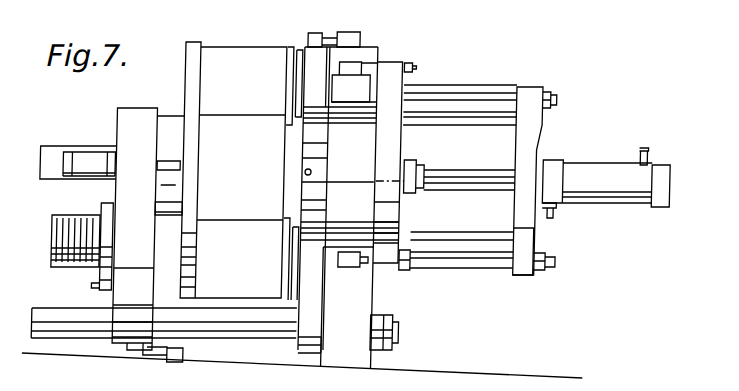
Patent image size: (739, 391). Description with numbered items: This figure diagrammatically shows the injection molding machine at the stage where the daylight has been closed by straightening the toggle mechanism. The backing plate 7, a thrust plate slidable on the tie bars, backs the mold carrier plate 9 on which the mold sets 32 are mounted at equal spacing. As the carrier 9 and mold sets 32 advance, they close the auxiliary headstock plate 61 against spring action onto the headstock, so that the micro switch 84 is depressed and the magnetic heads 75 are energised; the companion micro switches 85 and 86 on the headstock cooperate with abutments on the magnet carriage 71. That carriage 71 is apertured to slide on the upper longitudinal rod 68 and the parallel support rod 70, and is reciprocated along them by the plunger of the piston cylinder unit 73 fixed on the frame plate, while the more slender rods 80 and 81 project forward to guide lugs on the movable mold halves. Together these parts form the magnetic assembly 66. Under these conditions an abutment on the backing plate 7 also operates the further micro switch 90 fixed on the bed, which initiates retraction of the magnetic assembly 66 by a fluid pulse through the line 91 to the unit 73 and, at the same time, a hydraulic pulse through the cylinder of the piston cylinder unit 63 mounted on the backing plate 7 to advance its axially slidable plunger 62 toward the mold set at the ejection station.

The backing plate 7 is at (135, 338).
The mold carrier plate 9 is at (188, 92).
The mold sets 32 is at (246, 53).
The auxiliary headstock plate 61 is at (316, 353).
The plunger 62 is at (204, 165).
The piston cylinder unit 63 is at (87, 160).
The magnetic assembly 66 is at (425, 73).
The upper longitudinal rod 68 is at (509, 92).
The support rod 70 is at (468, 268).
The magnet carriage 71 is at (390, 147).
The piston cylinder unit 73 is at (606, 177).
The magnetic head 75 is at (322, 195).
The guide rod 80 is at (466, 113).
The guide rod 81 is at (488, 232).
The micro switch 84 is at (349, 33).
The micro switch 85 is at (345, 72).
The micro switch 86 is at (356, 268).
The micro switch 90 is at (190, 362).
The line 91 is at (560, 213).